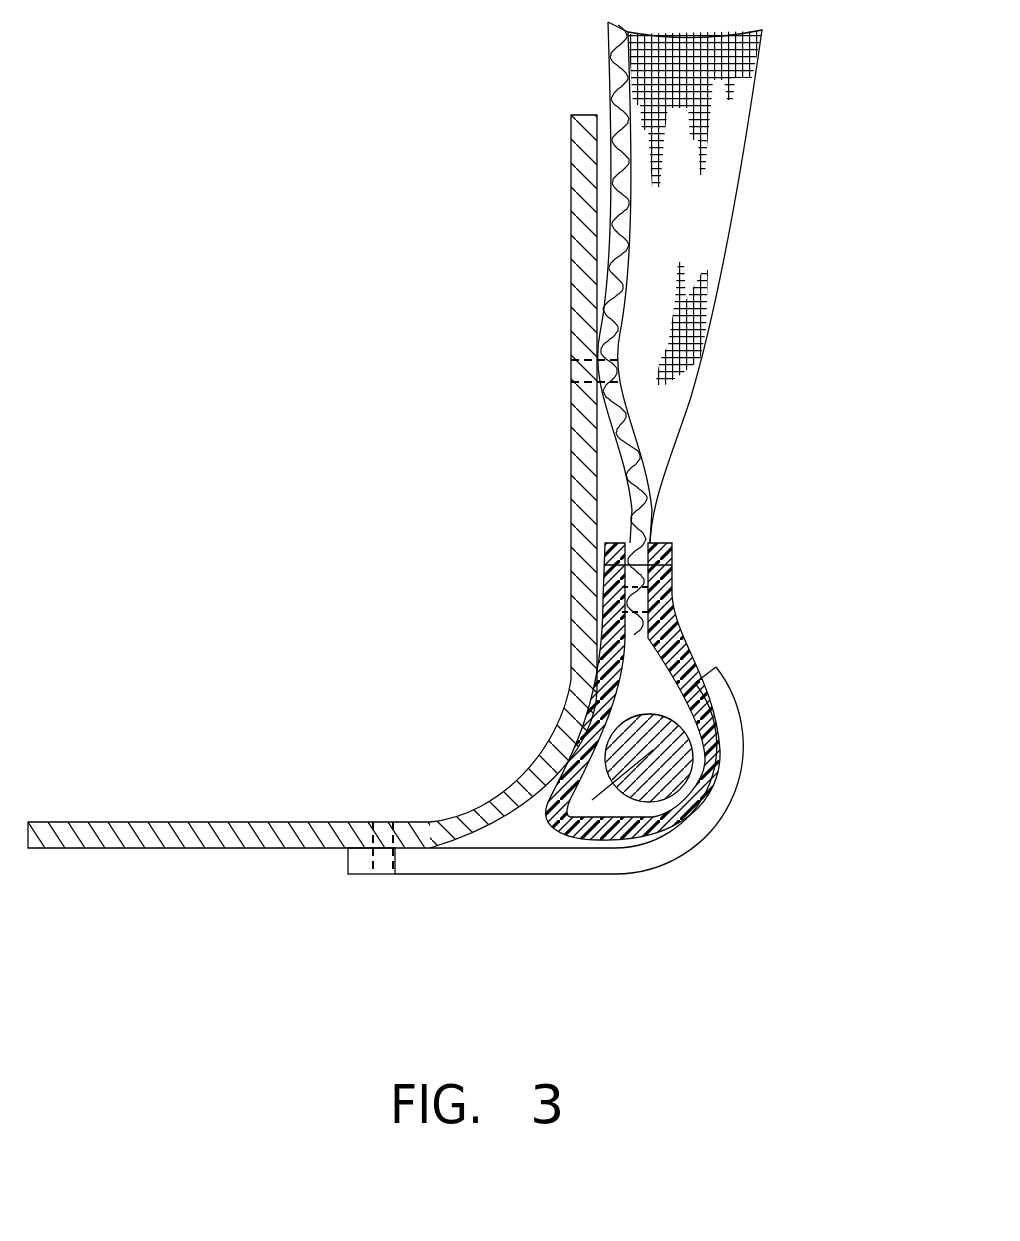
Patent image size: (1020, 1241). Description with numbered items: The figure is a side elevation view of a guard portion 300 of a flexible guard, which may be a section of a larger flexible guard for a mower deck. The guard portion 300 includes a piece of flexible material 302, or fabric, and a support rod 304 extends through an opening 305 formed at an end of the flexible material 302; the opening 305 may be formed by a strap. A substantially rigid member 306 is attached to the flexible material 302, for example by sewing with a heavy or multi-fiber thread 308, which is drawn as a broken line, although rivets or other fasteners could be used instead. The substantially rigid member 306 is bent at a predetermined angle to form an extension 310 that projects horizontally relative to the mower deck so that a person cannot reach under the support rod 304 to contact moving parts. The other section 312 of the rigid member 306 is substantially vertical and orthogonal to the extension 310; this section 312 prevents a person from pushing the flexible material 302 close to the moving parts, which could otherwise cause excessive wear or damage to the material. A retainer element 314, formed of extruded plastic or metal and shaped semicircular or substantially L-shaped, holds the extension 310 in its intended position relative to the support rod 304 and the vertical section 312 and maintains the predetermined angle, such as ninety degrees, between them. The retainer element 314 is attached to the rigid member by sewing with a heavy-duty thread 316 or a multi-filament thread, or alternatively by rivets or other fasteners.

The guard portion 300 is at (790, 132).
The flexible material 302 is at (667, 450).
The support rod 304 is at (652, 748).
The opening 305 is at (590, 800).
The substantially rigid member 306 is at (560, 485).
The heavy or multi-fiber thread 308 is at (574, 350).
The extension 310 is at (117, 848).
The section 312 is at (571, 230).
The retainer element 314 is at (745, 728).
The heavy-duty thread 316 is at (395, 857).